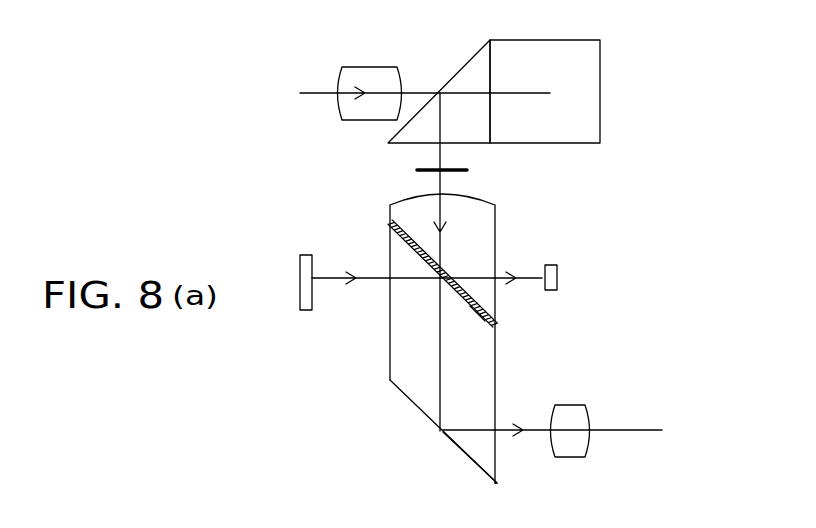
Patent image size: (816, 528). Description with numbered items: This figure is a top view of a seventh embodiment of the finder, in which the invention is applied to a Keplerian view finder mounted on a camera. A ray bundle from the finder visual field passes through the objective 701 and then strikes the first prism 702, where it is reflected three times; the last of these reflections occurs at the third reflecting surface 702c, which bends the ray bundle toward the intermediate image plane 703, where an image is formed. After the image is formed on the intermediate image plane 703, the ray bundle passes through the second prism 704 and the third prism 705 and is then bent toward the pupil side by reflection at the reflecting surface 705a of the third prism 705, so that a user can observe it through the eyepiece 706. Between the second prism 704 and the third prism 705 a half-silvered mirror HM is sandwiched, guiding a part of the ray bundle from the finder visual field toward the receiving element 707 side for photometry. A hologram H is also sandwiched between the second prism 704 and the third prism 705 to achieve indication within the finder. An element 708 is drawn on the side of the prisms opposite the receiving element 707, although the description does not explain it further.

The objective 701 is at (357, 67).
The first prism 702 is at (615, 60).
The third reflecting surface 702c is at (462, 68).
The intermediate image plane 703 is at (467, 170).
The second prism 704 is at (513, 226).
The third prism 705 is at (390, 414).
The reflecting surface 705a is at (448, 440).
The eyepiece 706 is at (577, 457).
The receiving element 707 is at (557, 272).
The light source / detector plate 708 is at (300, 270).
The half-silvered mirror HM is at (425, 268).
The hologram H is at (467, 303).